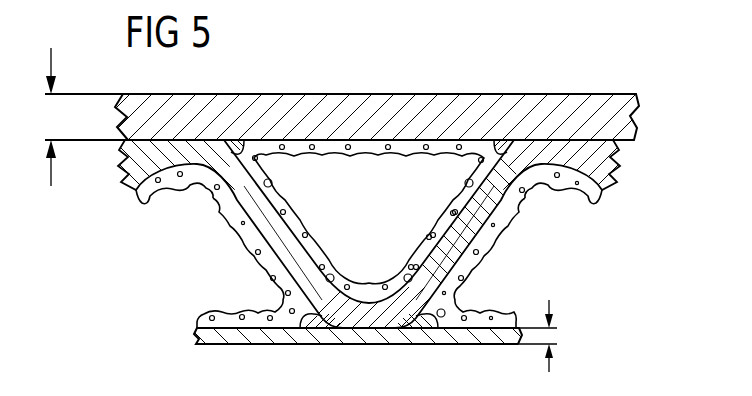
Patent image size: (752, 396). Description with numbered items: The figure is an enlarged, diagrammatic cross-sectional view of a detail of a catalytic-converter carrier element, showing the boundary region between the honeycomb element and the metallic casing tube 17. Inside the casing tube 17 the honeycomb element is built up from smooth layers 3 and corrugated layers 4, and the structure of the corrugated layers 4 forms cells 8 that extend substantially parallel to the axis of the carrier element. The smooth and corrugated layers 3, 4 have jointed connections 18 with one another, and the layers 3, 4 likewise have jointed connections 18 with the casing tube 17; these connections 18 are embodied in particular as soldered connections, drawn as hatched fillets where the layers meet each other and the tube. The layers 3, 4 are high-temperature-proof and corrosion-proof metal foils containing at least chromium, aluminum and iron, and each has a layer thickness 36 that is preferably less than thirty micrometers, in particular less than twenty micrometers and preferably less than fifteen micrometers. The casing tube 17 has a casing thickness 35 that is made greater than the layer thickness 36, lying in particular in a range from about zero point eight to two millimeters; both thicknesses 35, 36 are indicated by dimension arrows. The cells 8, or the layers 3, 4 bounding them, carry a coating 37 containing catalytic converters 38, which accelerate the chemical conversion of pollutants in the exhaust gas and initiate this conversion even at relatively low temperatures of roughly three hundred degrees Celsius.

The casing tube 17 is at (389, 93).
The smooth layer 3 is at (457, 335).
The corrugated layer 4 is at (122, 177).
The cell 8 is at (378, 223).
The jointed connection 18 is at (310, 330).
The casing thickness 35 is at (49, 117).
The layer thickness 36 is at (552, 336).
The coating 37 is at (266, 265).
The catalytic converter 38 is at (207, 197).